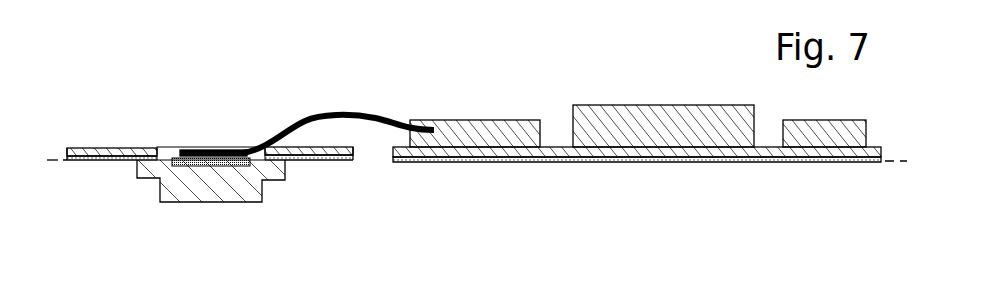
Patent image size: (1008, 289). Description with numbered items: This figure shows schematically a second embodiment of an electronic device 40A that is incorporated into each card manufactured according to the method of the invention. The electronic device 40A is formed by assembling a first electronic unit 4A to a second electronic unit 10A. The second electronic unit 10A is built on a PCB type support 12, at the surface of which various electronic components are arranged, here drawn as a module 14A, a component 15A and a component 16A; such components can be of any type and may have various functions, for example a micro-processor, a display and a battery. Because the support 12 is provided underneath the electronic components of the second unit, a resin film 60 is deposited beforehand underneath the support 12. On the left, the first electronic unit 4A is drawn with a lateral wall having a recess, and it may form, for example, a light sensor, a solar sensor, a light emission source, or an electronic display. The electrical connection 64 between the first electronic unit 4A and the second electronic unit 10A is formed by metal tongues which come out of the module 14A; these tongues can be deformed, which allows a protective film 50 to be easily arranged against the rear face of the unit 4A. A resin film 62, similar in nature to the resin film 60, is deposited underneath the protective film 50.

The electronic device 40A is at (130, 93).
The protective film 50 is at (130, 152).
The electrical connection 64 is at (318, 113).
The first electronic unit 4A is at (232, 185).
The resin film 62 is at (347, 163).
The second electronic unit 10A is at (553, 98).
The support 12 is at (553, 152).
The resin film 60 is at (712, 158).
The module 14A is at (478, 140).
The component 15A is at (661, 115).
The component 16A is at (834, 142).